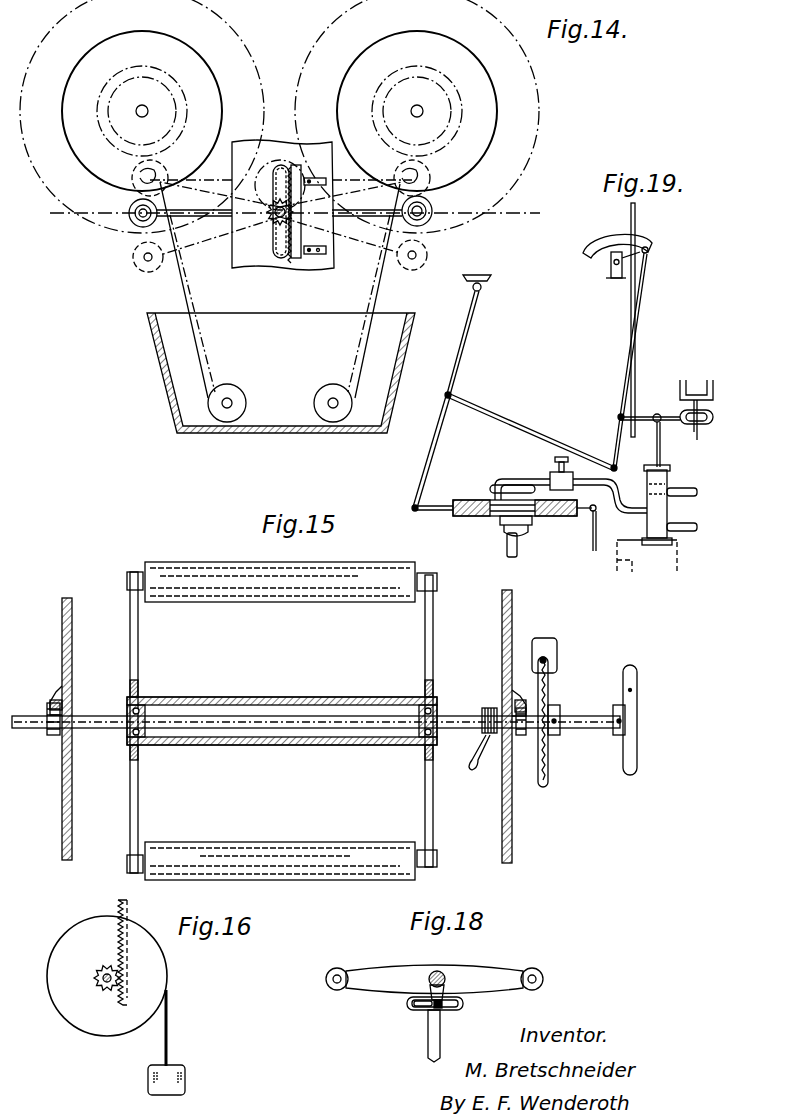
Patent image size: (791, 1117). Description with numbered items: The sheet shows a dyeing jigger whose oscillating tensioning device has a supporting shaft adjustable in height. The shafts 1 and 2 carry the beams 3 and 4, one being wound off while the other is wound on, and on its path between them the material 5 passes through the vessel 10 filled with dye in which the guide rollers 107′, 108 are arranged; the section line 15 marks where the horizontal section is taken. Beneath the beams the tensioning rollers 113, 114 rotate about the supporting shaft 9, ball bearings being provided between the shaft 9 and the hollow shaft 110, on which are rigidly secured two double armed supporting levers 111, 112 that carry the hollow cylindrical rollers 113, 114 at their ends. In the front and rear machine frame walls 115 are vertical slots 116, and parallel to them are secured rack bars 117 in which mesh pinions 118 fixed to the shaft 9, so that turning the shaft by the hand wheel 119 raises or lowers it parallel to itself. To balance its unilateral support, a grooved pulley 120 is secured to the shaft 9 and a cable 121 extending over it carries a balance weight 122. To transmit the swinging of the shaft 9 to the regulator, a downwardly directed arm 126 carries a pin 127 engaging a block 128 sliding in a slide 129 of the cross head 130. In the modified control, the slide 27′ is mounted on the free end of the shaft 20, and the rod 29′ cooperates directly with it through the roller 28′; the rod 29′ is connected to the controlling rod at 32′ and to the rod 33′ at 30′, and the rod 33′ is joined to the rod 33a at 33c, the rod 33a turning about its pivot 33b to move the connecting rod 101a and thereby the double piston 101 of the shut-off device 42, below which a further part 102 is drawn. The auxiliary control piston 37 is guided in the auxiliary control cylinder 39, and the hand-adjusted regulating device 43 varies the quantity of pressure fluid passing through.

In FIG. 14, the shaft 1 is at (148, 108).
In FIG. 14, the shaft 2 is at (423, 108).
In FIG. 14, the beam 3 is at (195, 58).
In FIG. 14, the beam 4 is at (462, 50).
In FIG. 14, the material 5 is at (175, 277).
In FIG. 14, the supporting shaft 9 is at (273, 218).
In FIG. 15, the supporting shaft 9 is at (95, 716).
In FIG. 16, the supporting shaft 9 is at (106, 992).
In FIG. 18, the supporting shaft 9 is at (441, 971).
In FIG. 14, the vessel 10 is at (402, 355).
In FIG. 14, the section line 15 is at (287, 213).
In FIG. 19, the shaft 20 is at (610, 266).
In FIG. 19, the slide 27′ is at (613, 228).
In FIG. 19, the roller 28′ is at (648, 252).
In FIG. 19, the rod 29′ is at (641, 292).
In FIG. 19, the connection point 30′ is at (616, 471).
In FIG. 19, the connection point 32′ is at (618, 416).
In FIG. 19, the rod 33′ is at (540, 436).
In FIG. 19, the rod 33a is at (436, 448).
In FIG. 19, the pivot 33b is at (481, 290).
In FIG. 19, the pivot 33c is at (452, 394).
In FIG. 19, the auxiliary control piston 37 is at (660, 406).
In FIG. 19, the auxiliary control cylinder 39 is at (670, 478).
In FIG. 19, the shut-off device 42 is at (500, 521).
In FIG. 19, the regulating device 43 is at (548, 481).
In FIG. 19, the double piston 101 is at (470, 500).
In FIG. 19, the connecting rod 101a is at (419, 511).
In FIG. 19, the outlet pipe 102 is at (518, 546).
In FIG. 14, the guide roller 107′ is at (222, 420).
In FIG. 14, the guide roller 108 is at (331, 420).
In FIG. 15, the hollow shaft 110 is at (258, 746).
In FIG. 15, the supporting lever 111 is at (140, 652).
In FIG. 15, the supporting lever 112 is at (434, 632).
In FIG. 14, the tensioning roller 113 is at (133, 226).
In FIG. 15, the tensioning roller 113 is at (373, 562).
In FIG. 14, the tensioning roller 114 is at (428, 223).
In FIG. 15, the tensioning roller 114 is at (292, 843).
In FIG. 14, the machine frame wall 115 is at (266, 147).
In FIG. 15, the machine frame wall 115 is at (73, 648).
In FIG. 14, the vertical slot 116 is at (279, 250).
In FIG. 14, the rack bar 117 is at (298, 258).
In FIG. 15, the rack bar 117 is at (50, 704).
In FIG. 16, the rack bar 117 is at (128, 906).
In FIG. 14, the pinion 118 is at (270, 222).
In FIG. 15, the pinion 118 is at (53, 736).
In FIG. 16, the pinion 118 is at (98, 988).
In FIG. 15, the hand wheel 119 is at (627, 690).
In FIG. 15, the grooved pulley 120 is at (549, 760).
In FIG. 16, the grooved pulley 120 is at (160, 962).
In FIG. 15, the cable 121 is at (548, 690).
In FIG. 16, the cable 121 is at (168, 1028).
In FIG. 15, the balance weight 122 is at (553, 640).
In FIG. 16, the balance weight 122 is at (183, 1066).
In FIG. 18, the arm 126 is at (443, 992).
In FIG. 18, the pin 127 is at (443, 1010).
In FIG. 18, the block 128 is at (446, 1007).
In FIG. 18, the slide 129 is at (421, 1008).
In FIG. 18, the cross head 130 is at (464, 1003).